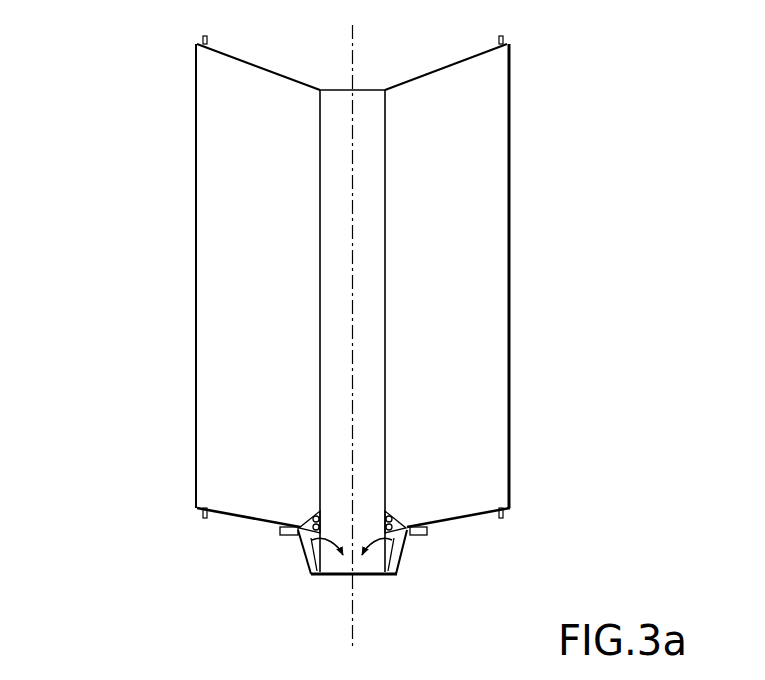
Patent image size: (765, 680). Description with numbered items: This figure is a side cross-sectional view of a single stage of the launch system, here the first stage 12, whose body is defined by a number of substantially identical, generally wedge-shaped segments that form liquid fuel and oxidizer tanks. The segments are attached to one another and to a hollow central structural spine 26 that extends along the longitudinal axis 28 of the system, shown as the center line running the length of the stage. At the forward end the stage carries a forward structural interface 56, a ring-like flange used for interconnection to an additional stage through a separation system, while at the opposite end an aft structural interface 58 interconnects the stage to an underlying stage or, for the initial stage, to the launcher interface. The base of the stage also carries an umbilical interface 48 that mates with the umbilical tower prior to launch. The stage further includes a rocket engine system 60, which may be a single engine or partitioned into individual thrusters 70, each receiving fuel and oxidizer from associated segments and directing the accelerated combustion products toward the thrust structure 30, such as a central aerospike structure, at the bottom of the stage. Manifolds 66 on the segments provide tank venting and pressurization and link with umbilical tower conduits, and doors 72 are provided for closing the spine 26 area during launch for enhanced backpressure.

The first stage 12 is at (146, 71).
The hollow central structural spine 26 is at (320, 311).
The longitudinal axis 28 is at (352, 69).
The thrust structure 30 is at (295, 556).
The umbilical interface 48 is at (404, 526).
The forward structural interface 56 is at (512, 44).
The aft structural interface 58 is at (512, 511).
The rocket engine system 60 is at (402, 486).
The manifolds 66 is at (300, 527).
The thrusters 70 is at (425, 536).
The doors 72 is at (395, 548).